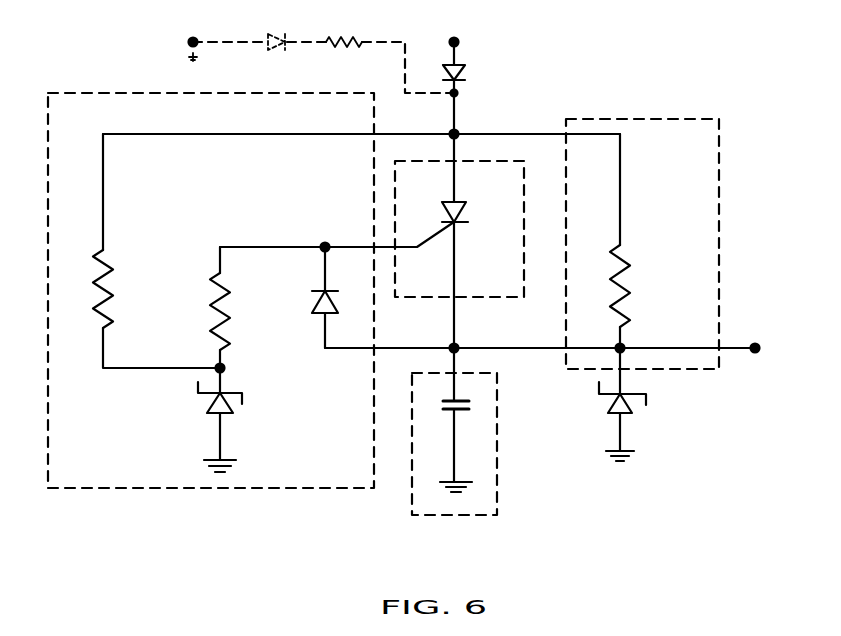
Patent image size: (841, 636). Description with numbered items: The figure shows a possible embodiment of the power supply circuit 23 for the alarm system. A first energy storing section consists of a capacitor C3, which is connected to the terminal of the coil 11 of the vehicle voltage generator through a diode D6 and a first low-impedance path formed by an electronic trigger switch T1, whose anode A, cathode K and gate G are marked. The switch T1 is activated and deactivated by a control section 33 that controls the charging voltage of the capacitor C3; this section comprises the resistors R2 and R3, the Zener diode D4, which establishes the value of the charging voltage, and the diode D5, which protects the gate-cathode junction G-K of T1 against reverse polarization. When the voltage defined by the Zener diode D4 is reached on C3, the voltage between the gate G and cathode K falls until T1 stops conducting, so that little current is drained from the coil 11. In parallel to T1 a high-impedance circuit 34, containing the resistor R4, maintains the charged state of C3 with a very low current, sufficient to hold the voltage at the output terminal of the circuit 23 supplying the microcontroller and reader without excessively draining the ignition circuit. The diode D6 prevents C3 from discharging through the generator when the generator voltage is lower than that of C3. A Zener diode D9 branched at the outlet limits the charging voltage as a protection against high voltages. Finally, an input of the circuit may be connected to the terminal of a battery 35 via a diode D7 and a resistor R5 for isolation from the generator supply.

The coil of the voltage generator 11 is at (474, 34).
The power supply circuit 23 is at (763, 333).
The battery 35 is at (304, 54).
The control section 33 is at (211, 290).
The high-impedance circuit 34 is at (642, 244).
The electronic trigger switch T1 is at (459, 229).
The anode A is at (422, 195).
The cathode K is at (479, 238).
The gate G is at (426, 261).
The Zener diode D4 is at (232, 420).
The diode D5 is at (308, 297).
The diode D6 is at (469, 77).
The diode D7 is at (275, 26).
The Zener diode D9 is at (634, 404).
The resistor R2 is at (136, 251).
The resistor R3 is at (196, 307).
The resistor R4 is at (635, 241).
The resistor R5 is at (344, 25).
The capacitor C3 is at (454, 444).